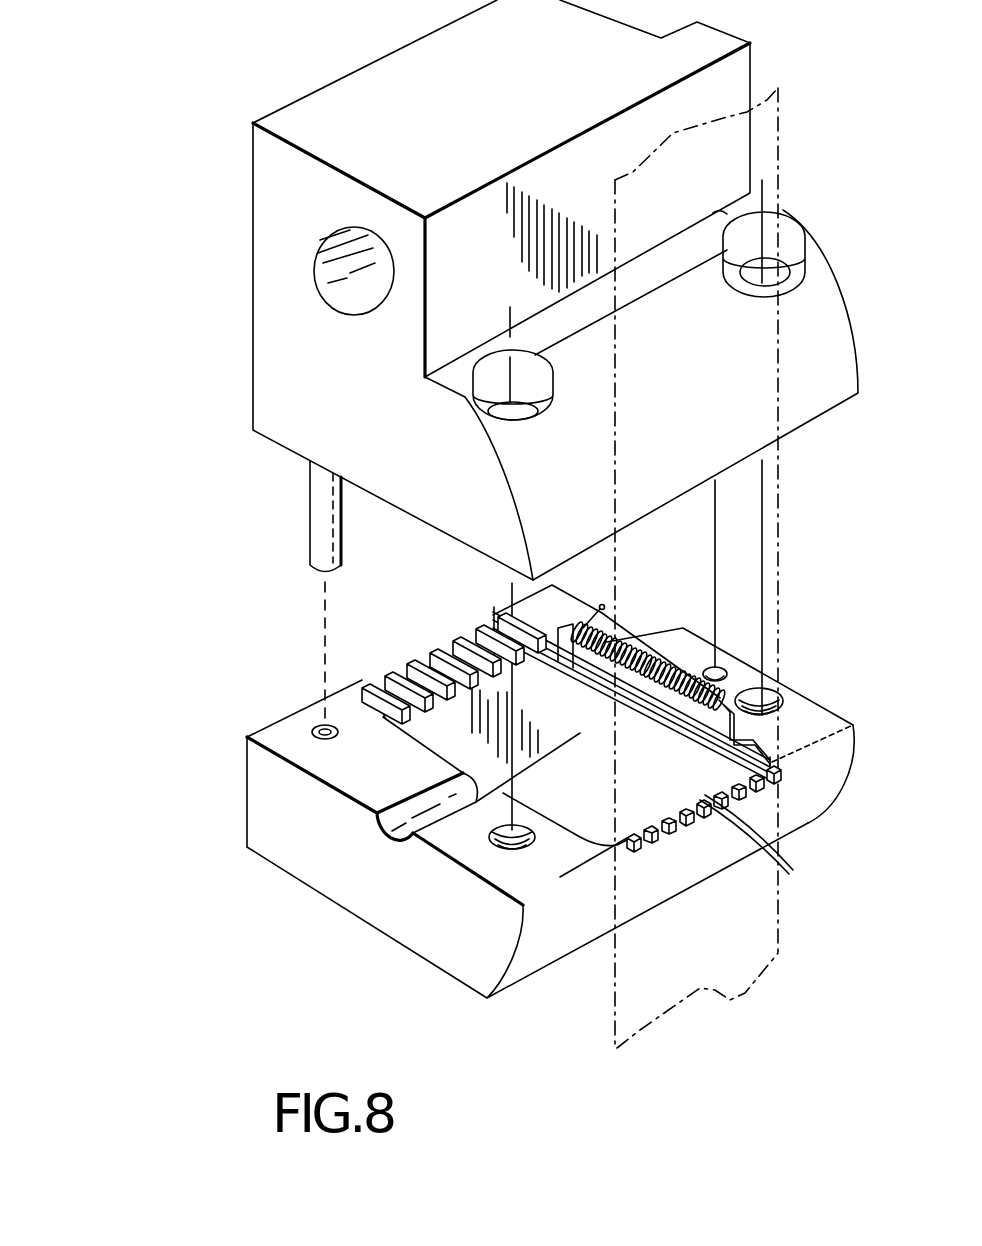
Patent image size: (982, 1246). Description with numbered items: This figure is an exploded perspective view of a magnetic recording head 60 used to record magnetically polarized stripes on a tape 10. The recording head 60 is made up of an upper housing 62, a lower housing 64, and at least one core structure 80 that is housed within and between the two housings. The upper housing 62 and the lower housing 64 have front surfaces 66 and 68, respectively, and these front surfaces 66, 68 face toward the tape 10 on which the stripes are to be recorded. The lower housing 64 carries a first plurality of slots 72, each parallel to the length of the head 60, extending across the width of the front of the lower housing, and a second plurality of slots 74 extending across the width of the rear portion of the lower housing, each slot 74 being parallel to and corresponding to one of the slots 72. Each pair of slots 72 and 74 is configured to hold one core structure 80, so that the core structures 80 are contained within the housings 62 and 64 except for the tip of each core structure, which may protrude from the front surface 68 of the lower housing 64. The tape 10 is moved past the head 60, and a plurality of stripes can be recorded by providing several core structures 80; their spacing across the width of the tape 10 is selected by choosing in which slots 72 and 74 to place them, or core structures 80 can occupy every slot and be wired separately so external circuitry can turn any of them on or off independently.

The tape 10 is at (615, 987).
The recording head 60 is at (197, 99).
The upper housing 62 is at (275, 347).
The lower housing 64 is at (363, 895).
The front surface 66 is at (787, 413).
The front surface 68 is at (808, 797).
The slots 72 is at (766, 850).
The slots 74 is at (447, 643).
The core structure 80 is at (671, 650).